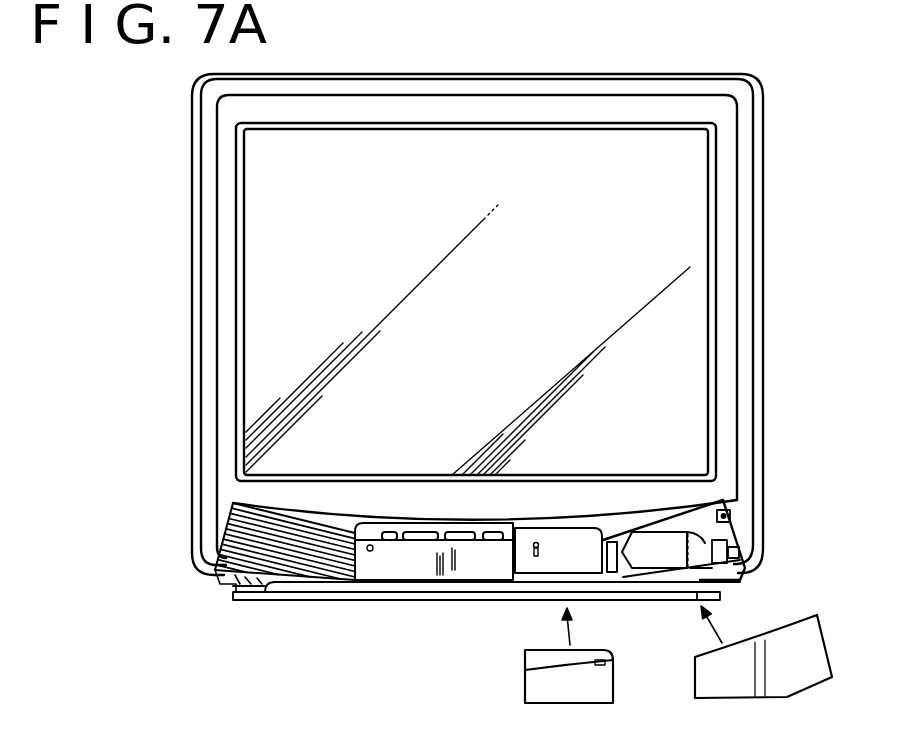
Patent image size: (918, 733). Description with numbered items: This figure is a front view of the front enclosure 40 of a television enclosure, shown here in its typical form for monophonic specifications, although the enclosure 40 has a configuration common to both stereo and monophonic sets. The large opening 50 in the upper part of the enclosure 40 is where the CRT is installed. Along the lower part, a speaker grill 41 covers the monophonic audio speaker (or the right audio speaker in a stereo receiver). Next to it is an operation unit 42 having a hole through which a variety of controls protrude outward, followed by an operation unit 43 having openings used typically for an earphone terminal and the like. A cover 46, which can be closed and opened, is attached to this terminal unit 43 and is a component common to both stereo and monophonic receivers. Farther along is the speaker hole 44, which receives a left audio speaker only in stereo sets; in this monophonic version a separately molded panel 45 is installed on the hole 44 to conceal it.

The front enclosure 40 is at (175, 603).
The speaker grill 41 is at (237, 590).
The operation unit 42 is at (410, 570).
The operation unit 43 is at (527, 555).
The speaker hole 44 is at (657, 558).
The panel 45 is at (825, 627).
The cover 46 is at (525, 683).
The opening 50 is at (258, 279).